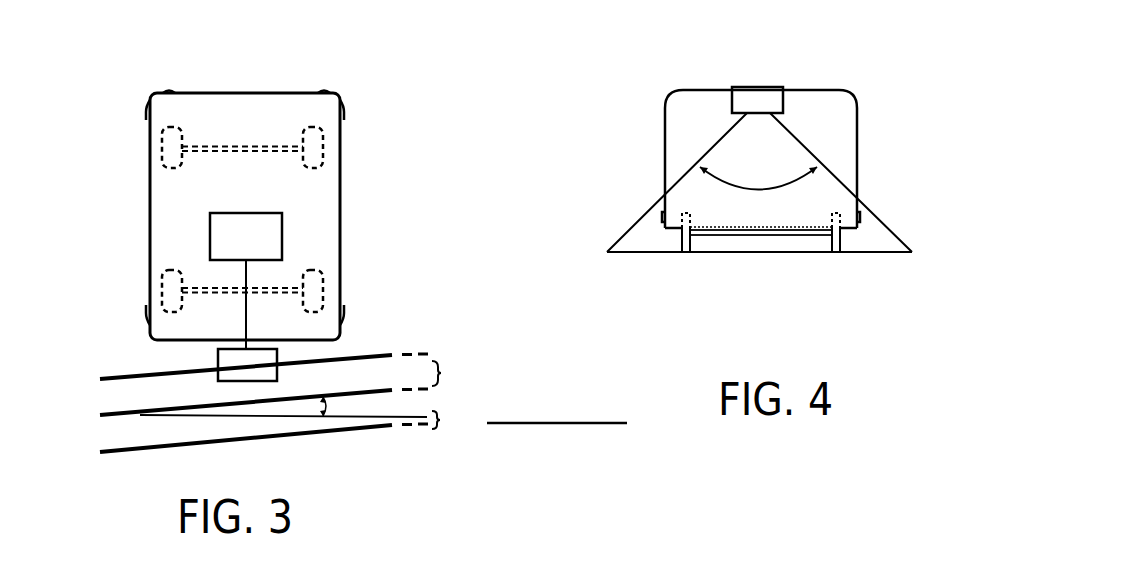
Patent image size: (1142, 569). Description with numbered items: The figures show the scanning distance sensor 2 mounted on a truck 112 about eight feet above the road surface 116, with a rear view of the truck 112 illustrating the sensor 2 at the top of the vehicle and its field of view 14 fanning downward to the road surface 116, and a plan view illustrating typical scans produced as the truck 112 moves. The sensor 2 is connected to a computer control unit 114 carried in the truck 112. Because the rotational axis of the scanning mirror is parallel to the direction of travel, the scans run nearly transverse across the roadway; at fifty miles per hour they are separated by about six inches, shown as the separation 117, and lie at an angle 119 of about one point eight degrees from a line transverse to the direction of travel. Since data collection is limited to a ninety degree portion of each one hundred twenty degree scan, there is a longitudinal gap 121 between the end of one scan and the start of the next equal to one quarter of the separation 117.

In FIG. 3, the scanning distance sensor 2 is at (250, 350).
In FIG. 4, the scanning distance sensor 2 is at (757, 87).
In FIG. 4, the field of view 14 is at (696, 171).
In FIG. 3, the truck 112 is at (339, 205).
In FIG. 4, the truck 112 is at (857, 118).
In FIG. 3, the central control unit (CCU) 114 is at (252, 213).
In FIG. 3, the road surface 116 is at (108, 376).
In FIG. 4, the road surface 116 is at (700, 252).
In FIG. 3, the separation between scans 117 is at (443, 362).
In FIG. 3, the scan angle 119 is at (340, 404).
In FIG. 3, the longitudinal separation between the end of one scan and the start of the next sc 121 is at (441, 420).